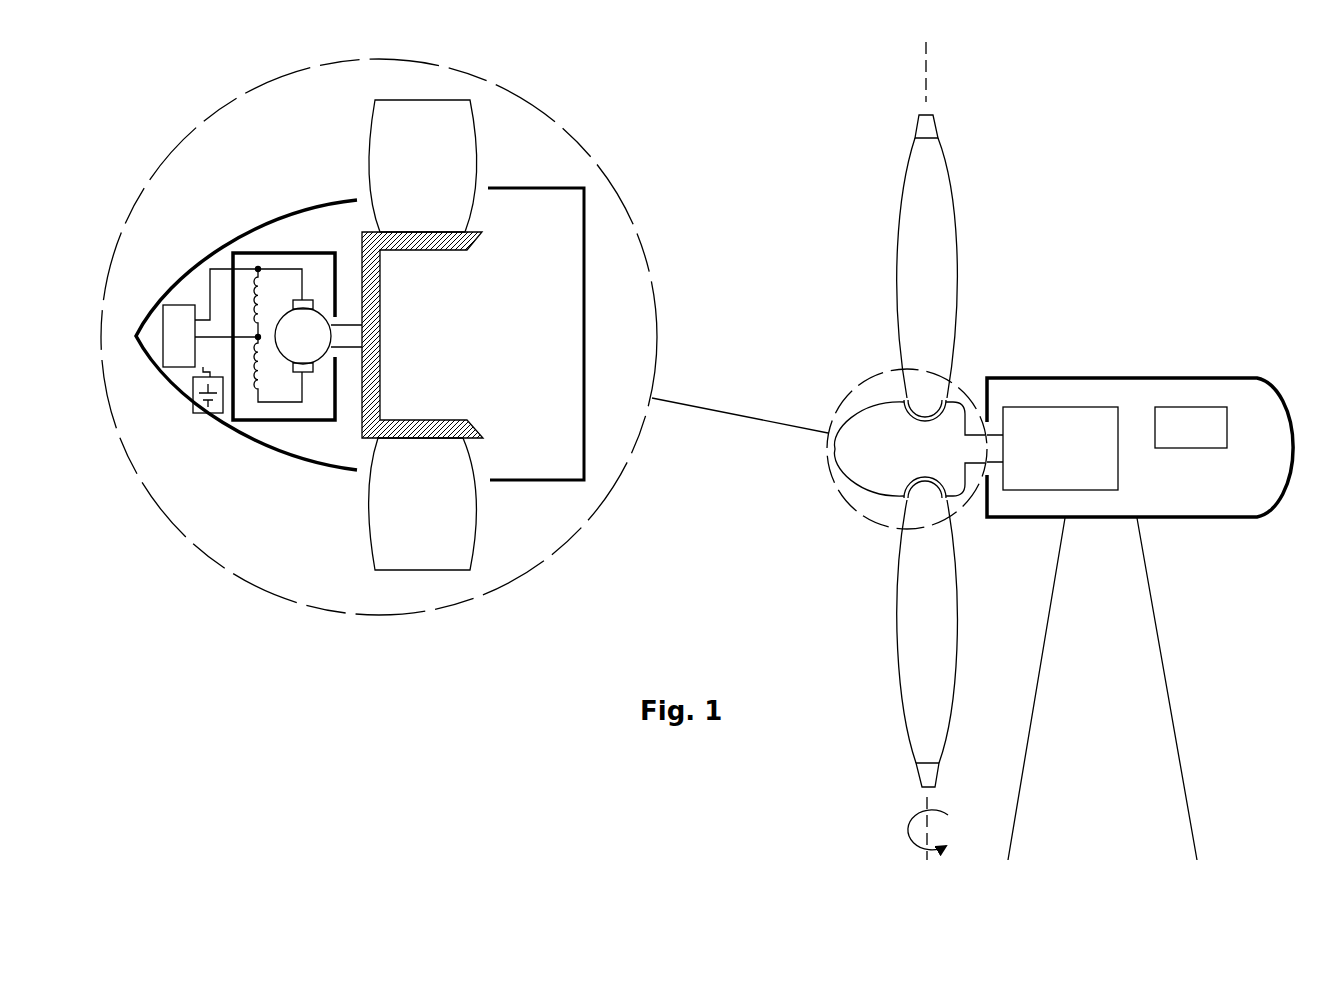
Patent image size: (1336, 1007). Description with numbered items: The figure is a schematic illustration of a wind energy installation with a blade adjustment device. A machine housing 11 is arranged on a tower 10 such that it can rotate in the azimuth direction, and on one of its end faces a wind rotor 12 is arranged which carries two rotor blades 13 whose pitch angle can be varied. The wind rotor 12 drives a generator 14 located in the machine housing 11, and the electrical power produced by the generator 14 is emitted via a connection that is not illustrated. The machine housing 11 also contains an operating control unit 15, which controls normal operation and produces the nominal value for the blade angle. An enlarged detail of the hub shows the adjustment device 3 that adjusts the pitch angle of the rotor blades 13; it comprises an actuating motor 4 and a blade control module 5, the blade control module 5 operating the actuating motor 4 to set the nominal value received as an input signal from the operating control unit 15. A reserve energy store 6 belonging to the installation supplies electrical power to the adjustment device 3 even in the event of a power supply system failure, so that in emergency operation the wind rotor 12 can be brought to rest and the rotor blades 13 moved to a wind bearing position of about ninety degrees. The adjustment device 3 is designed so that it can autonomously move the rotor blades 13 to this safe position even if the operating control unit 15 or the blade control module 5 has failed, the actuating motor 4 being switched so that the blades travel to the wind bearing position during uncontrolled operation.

The adjustment device 3 is at (347, 228).
The actuating motor 4 is at (284, 424).
The blade control module 5 is at (180, 315).
The reserve energy store 6 is at (217, 413).
The tower 10 is at (1147, 712).
The machine housing 11 is at (1213, 520).
The wind rotor 12 is at (973, 355).
The rotor blade 13 is at (931, 213).
The generator 14 is at (1057, 425).
The operating control unit 15 is at (1193, 425).